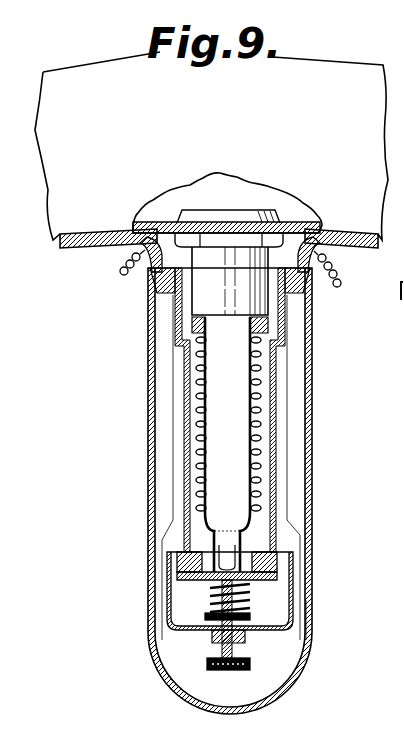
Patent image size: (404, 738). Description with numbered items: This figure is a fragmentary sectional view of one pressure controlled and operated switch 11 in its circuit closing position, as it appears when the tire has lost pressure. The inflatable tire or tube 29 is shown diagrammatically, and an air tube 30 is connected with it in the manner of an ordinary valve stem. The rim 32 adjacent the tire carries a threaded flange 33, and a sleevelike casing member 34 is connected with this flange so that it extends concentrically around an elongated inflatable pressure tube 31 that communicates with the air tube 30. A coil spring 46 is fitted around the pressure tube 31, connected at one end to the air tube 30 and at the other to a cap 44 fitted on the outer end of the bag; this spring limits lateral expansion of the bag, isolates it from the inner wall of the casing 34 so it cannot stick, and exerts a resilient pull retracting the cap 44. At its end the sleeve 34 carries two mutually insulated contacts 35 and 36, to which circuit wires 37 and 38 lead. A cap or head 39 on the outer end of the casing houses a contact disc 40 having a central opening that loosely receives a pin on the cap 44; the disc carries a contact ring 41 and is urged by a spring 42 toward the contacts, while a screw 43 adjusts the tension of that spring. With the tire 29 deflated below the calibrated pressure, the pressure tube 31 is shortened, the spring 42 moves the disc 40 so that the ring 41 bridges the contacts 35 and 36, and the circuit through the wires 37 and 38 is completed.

The inflatable tire or tube 29 is at (58, 197).
The air tube 30 is at (213, 252).
The rim 32 is at (93, 250).
The threaded flange 33 is at (153, 280).
The circuit wire 37 is at (126, 275).
The circuit wire 38 is at (337, 290).
The pressure controlled and operated switch 11 is at (150, 480).
The sleevelike casing member 34 is at (283, 486).
The inflatable pressure tube 31 is at (240, 410).
The coil spring 46 is at (192, 408).
The cap 44 is at (205, 527).
The contact disc 40 is at (284, 597).
The contact 35 is at (178, 566).
The contact 36 is at (280, 567).
The contact ring 41 is at (207, 594).
The spring 42 is at (168, 618).
The cap or head 39 is at (308, 640).
The screw 43 is at (231, 670).